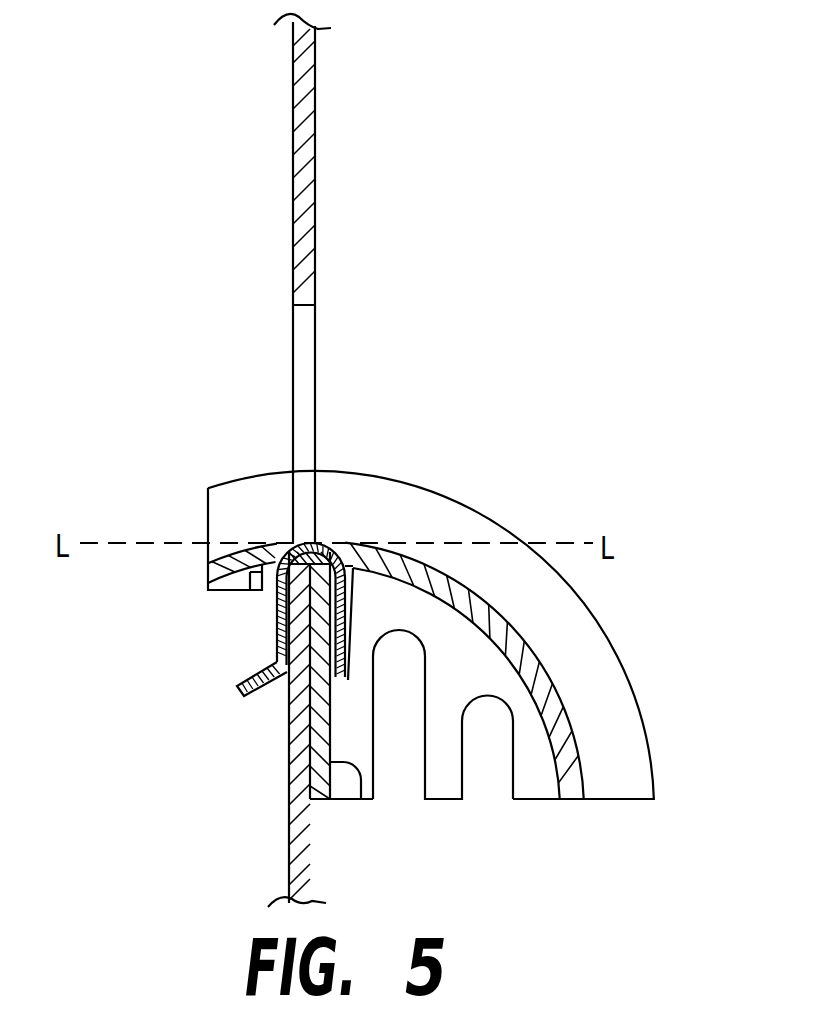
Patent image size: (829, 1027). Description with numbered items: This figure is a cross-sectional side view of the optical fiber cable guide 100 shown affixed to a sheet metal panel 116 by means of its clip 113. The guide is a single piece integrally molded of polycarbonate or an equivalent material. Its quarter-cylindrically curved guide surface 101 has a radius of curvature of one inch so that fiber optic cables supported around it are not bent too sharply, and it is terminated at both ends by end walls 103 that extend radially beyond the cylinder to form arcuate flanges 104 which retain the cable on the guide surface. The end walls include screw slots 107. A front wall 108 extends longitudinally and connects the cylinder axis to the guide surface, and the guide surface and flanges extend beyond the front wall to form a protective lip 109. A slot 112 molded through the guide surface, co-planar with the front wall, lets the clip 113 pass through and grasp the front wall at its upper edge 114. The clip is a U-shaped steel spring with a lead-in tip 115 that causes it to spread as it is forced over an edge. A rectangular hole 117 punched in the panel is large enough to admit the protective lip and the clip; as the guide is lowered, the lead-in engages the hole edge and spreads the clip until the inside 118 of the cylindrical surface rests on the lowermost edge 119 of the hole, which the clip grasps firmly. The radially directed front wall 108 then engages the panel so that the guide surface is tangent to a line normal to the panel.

The optical fiber cable guide 100 is at (606, 609).
The guide surface 101 is at (461, 564).
The end walls 103 is at (485, 683).
The arcuate flanges 104 is at (597, 690).
The screw slots 107 is at (398, 788).
The front wall 108 is at (361, 799).
The protective lip 109 is at (196, 585).
The slot 112 is at (265, 530).
The clip 113 is at (288, 532).
The upper edge 114 is at (327, 548).
The lead-in tip 115 is at (230, 703).
The sheet metal panel 116 is at (322, 120).
The rectangular hole 117 is at (322, 350).
The inside of the guide's cylindrical surface 118 is at (250, 591).
The lowermost edge 119 is at (300, 543).